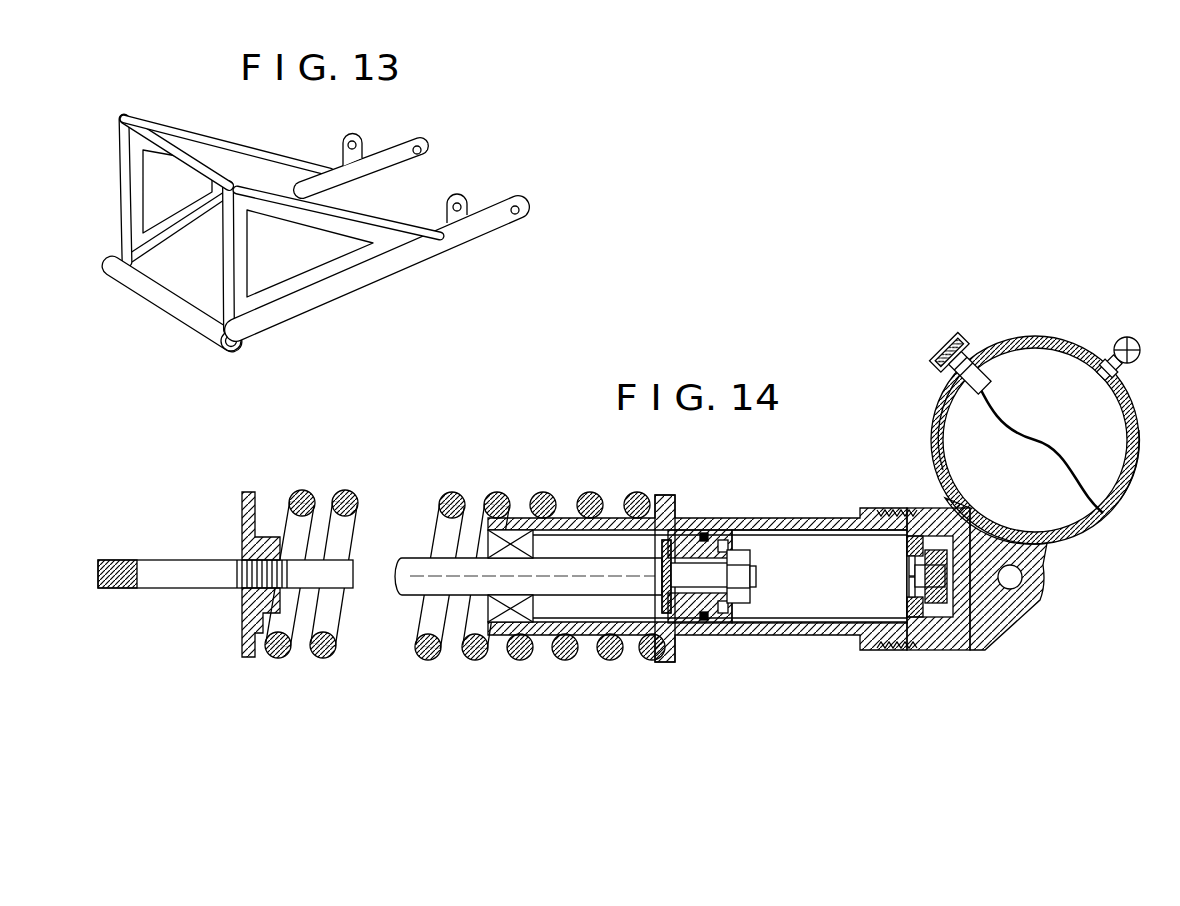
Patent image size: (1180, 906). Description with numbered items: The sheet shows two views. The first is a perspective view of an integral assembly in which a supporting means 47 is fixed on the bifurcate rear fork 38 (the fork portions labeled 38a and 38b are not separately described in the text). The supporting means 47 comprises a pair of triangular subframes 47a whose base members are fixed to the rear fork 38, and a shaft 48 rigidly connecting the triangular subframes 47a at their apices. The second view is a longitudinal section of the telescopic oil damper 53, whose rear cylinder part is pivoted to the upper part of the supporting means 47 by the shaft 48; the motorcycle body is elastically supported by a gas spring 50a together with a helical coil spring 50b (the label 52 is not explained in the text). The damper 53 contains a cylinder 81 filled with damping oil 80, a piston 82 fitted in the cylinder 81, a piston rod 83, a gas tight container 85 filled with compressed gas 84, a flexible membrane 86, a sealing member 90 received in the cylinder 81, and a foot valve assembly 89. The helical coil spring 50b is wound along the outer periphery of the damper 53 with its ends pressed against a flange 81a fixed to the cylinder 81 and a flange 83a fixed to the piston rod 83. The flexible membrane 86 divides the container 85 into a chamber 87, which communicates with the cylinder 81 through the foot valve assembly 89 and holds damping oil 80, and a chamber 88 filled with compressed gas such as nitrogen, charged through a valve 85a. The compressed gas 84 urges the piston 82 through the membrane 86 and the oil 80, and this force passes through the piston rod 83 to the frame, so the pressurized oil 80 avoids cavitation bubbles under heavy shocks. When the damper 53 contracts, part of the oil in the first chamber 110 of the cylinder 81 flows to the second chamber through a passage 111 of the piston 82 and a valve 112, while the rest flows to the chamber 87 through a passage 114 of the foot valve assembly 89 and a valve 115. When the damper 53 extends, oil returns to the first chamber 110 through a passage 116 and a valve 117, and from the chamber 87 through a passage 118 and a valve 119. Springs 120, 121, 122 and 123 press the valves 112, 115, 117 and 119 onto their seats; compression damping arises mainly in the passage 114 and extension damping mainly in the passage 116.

In FIG. 13, the bifurcate rear fork 38 is at (427, 275).
In FIG. 13, the bottom cross tube 38a is at (173, 321).
In FIG. 13, the gusset plate 38b is at (270, 222).
In FIG. 13, the supporting means 47 is at (298, 152).
In FIG. 13, the triangular subframes 47a is at (208, 153).
In FIG. 13, the shaft 48 is at (187, 157).
In FIG. 14, the gas spring 50a is at (1136, 488).
In FIG. 14, the helical coil spring 50b is at (569, 655).
In FIG. 14, the spring 52 is at (500, 490).
In FIG. 14, the telescopic oil damper 53 is at (563, 504).
In FIG. 14, the damping oil 80 is at (873, 548).
In FIG. 14, the cylinder 81 is at (789, 523).
In FIG. 14, the flange 81a is at (665, 650).
In FIG. 14, the piston 82 is at (686, 625).
In FIG. 14, the piston rod 83 is at (415, 582).
In FIG. 14, the flange 83a is at (250, 655).
In FIG. 14, the compressed gas 84 is at (1035, 440).
In FIG. 14, the gas tight container 85 is at (1080, 530).
In FIG. 14, the valve 85a is at (1126, 340).
In FIG. 14, the flexible membrane 86 is at (1055, 458).
In FIG. 14, the chamber 87 is at (943, 428).
In FIG. 14, the chamber 88 is at (1010, 362).
In FIG. 14, the foot valve assembly 89 is at (930, 632).
In FIG. 14, the sealing member 90 is at (504, 620).
In FIG. 14, the first chamber 110 is at (826, 533).
In FIG. 14, the passage 111 is at (716, 622).
In FIG. 14, the valve 112 is at (662, 605).
In FIG. 14, the passage 114 is at (915, 640).
In FIG. 14, the valve 115 is at (952, 612).
In FIG. 14, the passage 116 is at (688, 548).
In FIG. 14, the valve 117 is at (726, 545).
In FIG. 14, the passage 118 is at (914, 545).
In FIG. 14, the valve 119 is at (909, 562).
In FIG. 14, the spring 120 is at (662, 557).
In FIG. 14, the spring 121 is at (966, 615).
In FIG. 14, the spring 122 is at (740, 548).
In FIG. 14, the spring 123 is at (909, 603).